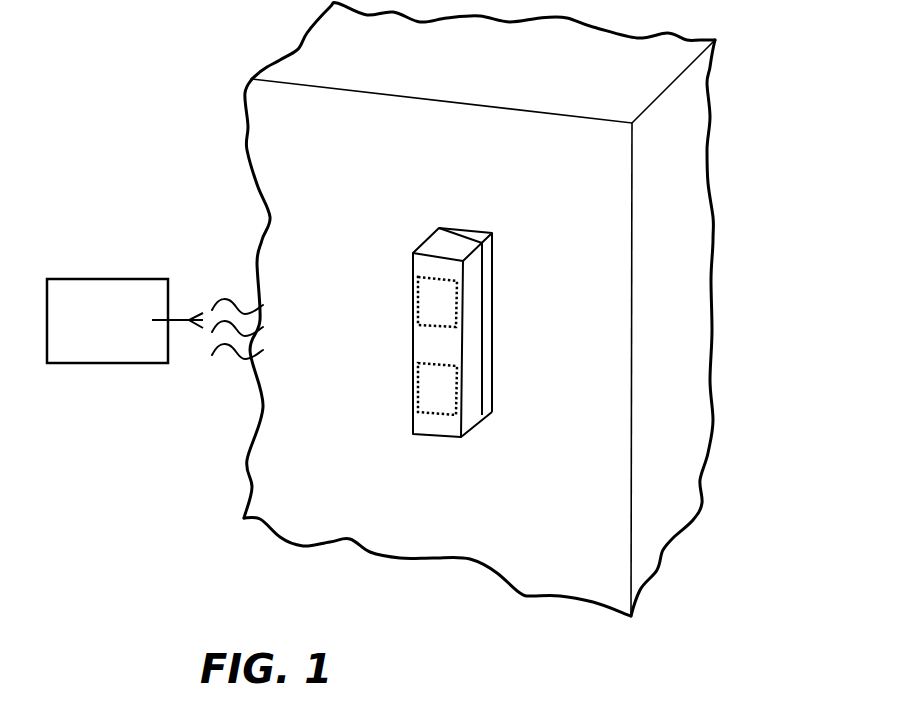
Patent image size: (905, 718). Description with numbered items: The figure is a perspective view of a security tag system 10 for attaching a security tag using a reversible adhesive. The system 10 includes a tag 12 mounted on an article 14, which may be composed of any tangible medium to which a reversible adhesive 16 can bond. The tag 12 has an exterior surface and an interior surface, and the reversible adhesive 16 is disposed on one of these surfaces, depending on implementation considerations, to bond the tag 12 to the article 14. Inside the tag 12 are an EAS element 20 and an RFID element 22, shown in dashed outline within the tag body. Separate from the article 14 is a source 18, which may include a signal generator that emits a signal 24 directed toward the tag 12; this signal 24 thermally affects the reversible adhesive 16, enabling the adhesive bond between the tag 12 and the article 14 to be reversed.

The security tag system 10 is at (415, 309).
The tag 12 is at (444, 308).
The article 14 is at (716, 77).
The reversible adhesive 16 is at (487, 258).
The source 18 is at (120, 278).
The EAS element 20 is at (432, 303).
The RFID element 22 is at (428, 392).
The signal 24 is at (210, 370).